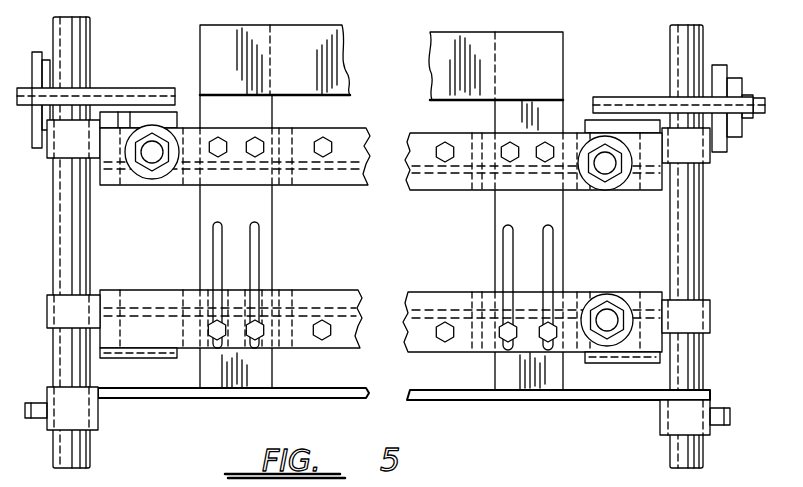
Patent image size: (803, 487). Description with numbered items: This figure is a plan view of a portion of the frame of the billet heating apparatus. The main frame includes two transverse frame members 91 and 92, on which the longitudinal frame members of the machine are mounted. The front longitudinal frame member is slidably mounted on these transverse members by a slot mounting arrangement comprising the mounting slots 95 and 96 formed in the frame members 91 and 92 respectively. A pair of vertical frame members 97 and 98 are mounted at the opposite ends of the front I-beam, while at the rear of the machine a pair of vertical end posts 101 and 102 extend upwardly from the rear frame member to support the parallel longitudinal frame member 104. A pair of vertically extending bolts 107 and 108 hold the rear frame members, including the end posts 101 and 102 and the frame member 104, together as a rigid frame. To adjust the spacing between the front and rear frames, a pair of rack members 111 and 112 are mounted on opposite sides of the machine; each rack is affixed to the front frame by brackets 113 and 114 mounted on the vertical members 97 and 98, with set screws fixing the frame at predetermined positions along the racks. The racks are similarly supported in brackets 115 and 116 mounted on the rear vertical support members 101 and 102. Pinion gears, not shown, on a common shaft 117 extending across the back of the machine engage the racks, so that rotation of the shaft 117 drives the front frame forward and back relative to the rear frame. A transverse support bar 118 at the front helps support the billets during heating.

The transverse frame member 91 is at (220, 380).
The transverse frame member 92 is at (552, 383).
The mounting slot 95 is at (215, 243).
The mounting slot 96 is at (515, 235).
The vertical frame member 97 is at (112, 292).
The vertical frame member 98 is at (655, 279).
The vertical end post 101 is at (152, 115).
The vertical end post 102 is at (617, 127).
The longitudinal frame member 104 is at (353, 143).
The vertically extending bolt 107 is at (151, 143).
The vertically extending bolt 108 is at (603, 155).
The rack member 111 is at (68, 205).
The rack member 112 is at (697, 237).
The bracket 113 is at (60, 315).
The bracket 114 is at (698, 322).
The bracket 115 is at (55, 157).
The bracket 116 is at (700, 166).
The common shaft 117 is at (655, 72).
The transverse support bar 118 is at (462, 400).